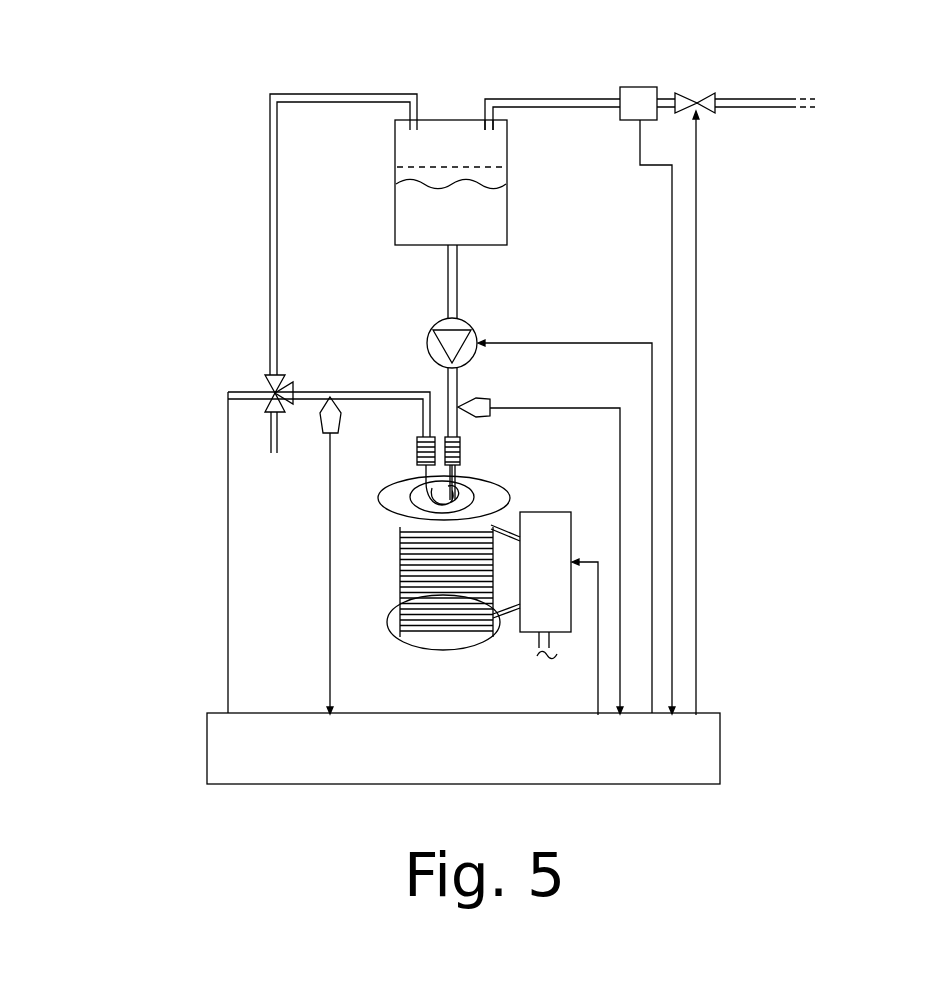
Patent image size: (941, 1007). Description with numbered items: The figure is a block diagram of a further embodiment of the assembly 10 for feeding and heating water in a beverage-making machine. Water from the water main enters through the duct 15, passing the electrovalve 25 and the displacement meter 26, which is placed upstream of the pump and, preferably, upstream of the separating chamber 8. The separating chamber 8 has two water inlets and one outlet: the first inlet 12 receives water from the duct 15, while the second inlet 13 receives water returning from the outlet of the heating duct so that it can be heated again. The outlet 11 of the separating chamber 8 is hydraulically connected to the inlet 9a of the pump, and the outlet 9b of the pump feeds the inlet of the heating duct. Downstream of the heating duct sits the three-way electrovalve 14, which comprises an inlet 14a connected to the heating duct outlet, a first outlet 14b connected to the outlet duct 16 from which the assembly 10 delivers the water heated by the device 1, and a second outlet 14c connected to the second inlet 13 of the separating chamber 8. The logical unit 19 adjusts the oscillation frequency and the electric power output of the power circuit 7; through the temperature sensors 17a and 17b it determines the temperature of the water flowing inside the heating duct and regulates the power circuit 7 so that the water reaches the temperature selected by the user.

The device 1 is at (502, 638).
The power circuit 7 is at (558, 523).
The separating chamber 8 is at (390, 203).
The inlet of the pump 9a is at (460, 316).
The outlet of the pump 9b is at (458, 370).
The assembly 10 is at (232, 156).
The outlet 11 is at (448, 247).
The first inlet 12 is at (507, 120).
The second inlet 13 is at (397, 122).
The three-way electrovalve 14 is at (166, 501).
The inlet 14a is at (293, 400).
The first outlet 14b is at (265, 407).
The second outlet 14c is at (262, 381).
The duct 15 is at (612, 99).
The outlet duct 16 is at (273, 450).
The temperature sensor 17a is at (490, 405).
The temperature sensor 17b is at (331, 418).
The logical unit 19 is at (692, 730).
The electrovalve 25 is at (713, 113).
The displacement meter 26 is at (660, 118).